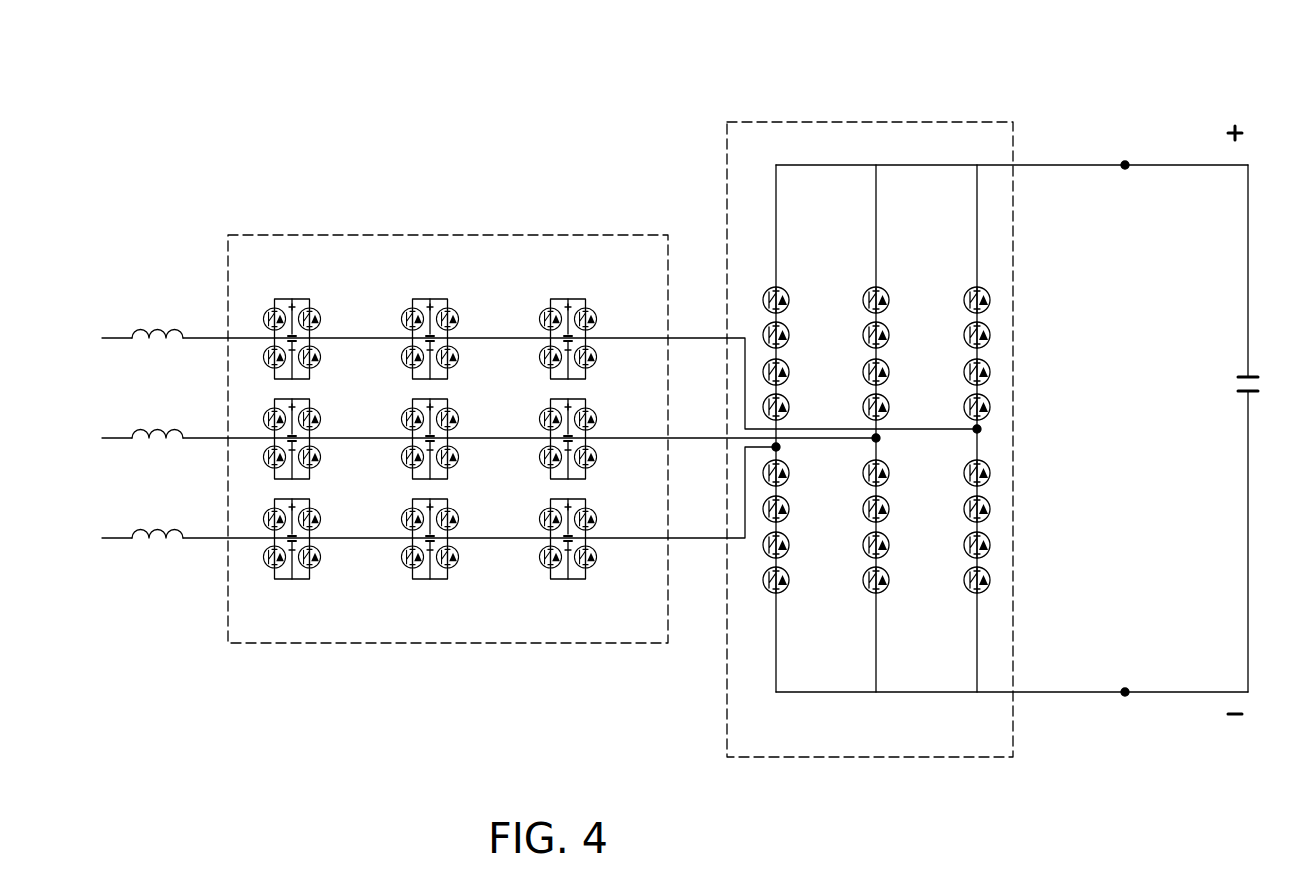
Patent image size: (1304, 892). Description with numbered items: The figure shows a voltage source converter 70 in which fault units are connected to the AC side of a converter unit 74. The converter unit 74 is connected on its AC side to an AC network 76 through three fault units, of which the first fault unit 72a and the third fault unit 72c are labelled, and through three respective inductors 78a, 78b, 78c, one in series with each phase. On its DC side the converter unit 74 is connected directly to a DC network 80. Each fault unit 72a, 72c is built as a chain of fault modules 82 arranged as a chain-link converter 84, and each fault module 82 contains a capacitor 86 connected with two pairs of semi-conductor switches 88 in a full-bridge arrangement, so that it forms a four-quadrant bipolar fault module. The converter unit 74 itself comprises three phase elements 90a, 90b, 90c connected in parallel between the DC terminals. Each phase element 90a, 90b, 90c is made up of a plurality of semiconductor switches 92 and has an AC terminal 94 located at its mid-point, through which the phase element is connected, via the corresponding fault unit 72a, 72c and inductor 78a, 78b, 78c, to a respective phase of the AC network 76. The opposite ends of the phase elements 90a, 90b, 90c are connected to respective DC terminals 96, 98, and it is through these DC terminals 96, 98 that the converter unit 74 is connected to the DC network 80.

The voltage source converter 70 is at (73, 162).
The fault unit 72a is at (445, 317).
The fault unit 72c is at (416, 568).
The converter unit 74 is at (987, 425).
The AC network 76 is at (116, 338).
The inductor 78a is at (139, 330).
The inductor 78b is at (139, 430).
The inductor 78c is at (139, 530).
The DC network 80 is at (1248, 165).
The fault module 82 is at (429, 568).
The chain-link converter 84 is at (580, 588).
The capacitor 86 is at (539, 300).
The semi-conductor switches 88 is at (601, 300).
The phase element 90a is at (810, 428).
The phase element 90b is at (876, 257).
The phase element 90c is at (977, 238).
The semiconductor switches 92 is at (790, 300).
The AC terminal 94 is at (782, 448).
The DC terminal 96 is at (1125, 692).
The DC terminal 98 is at (1125, 165).